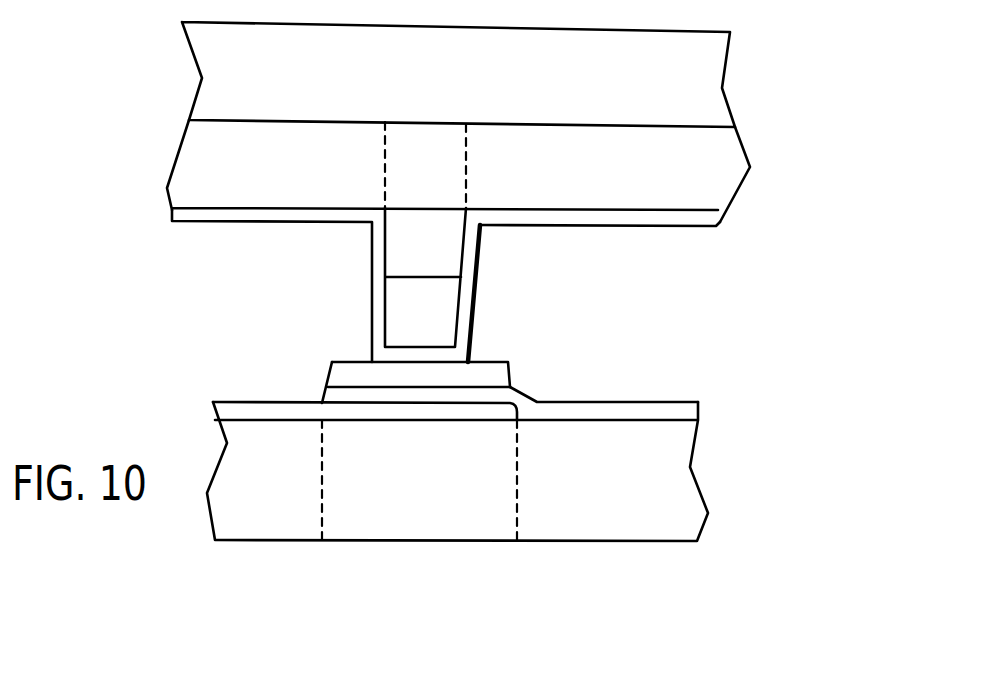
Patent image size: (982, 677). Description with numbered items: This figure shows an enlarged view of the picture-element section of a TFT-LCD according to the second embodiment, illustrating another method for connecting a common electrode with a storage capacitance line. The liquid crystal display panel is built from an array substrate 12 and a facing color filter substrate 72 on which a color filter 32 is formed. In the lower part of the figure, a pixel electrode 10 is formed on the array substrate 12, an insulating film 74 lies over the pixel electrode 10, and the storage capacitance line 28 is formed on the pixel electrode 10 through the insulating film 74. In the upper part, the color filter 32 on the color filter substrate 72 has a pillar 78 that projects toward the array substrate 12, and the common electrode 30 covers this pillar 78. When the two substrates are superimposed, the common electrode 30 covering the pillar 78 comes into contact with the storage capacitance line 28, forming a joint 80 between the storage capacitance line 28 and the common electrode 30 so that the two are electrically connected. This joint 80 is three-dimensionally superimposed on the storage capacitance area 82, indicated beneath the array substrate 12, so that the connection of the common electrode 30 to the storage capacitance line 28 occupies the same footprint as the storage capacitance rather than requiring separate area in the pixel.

The color filter substrate 72 is at (712, 73).
The color filter 32 is at (722, 185).
The common electrode 30 is at (288, 223).
The pillar 78 is at (448, 172).
The joint 80 is at (490, 357).
The storage capacitance line 28 is at (510, 377).
The insulating film 74 is at (688, 415).
The array substrate 12 is at (690, 487).
The pixel electrode 10 is at (243, 407).
The storage capacitance area 82 is at (517, 570).